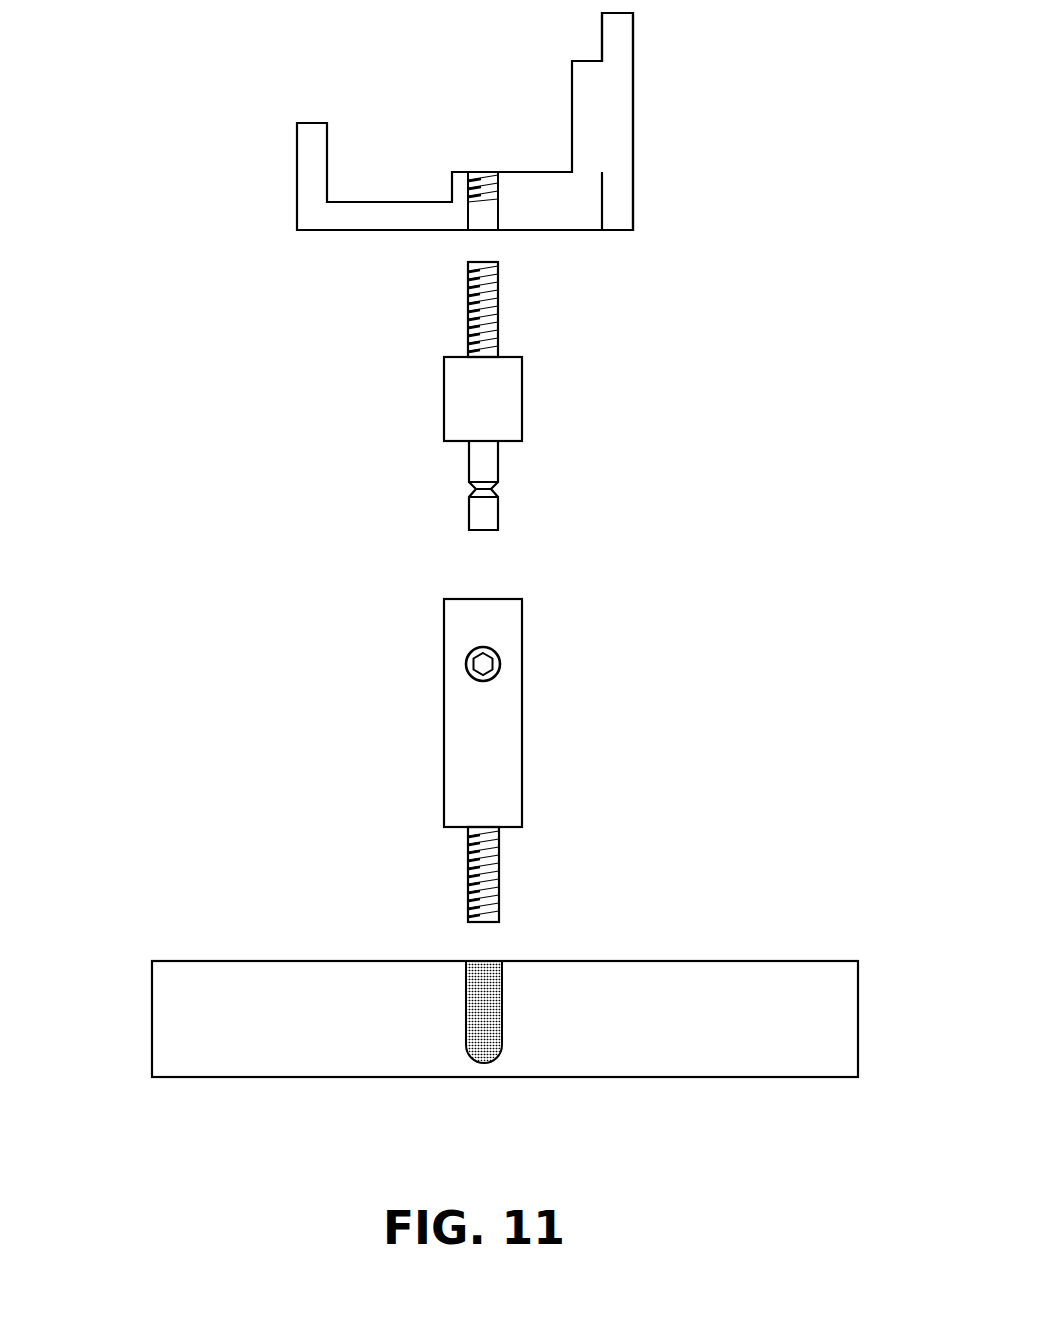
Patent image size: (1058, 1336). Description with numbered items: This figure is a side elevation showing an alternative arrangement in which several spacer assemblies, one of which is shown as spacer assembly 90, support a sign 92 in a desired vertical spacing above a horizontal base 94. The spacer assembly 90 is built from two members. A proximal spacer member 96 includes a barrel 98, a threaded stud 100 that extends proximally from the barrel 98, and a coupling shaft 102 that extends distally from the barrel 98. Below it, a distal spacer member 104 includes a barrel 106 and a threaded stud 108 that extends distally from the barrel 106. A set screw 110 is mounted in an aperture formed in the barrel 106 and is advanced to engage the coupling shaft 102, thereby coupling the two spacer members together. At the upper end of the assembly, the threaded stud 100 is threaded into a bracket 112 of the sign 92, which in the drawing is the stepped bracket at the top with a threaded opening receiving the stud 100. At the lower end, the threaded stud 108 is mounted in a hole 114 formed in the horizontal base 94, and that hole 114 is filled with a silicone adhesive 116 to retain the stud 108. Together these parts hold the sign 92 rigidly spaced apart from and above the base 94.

The spacer assembly 90 is at (237, 579).
The sign 92 is at (308, 158).
The horizontal base 94 is at (195, 993).
The proximal spacer member 96 is at (442, 406).
The barrel 98 is at (508, 398).
The threaded stud 100 is at (500, 318).
The coupling shaft 102 is at (502, 512).
The distal spacer member 104 is at (416, 760).
The barrel 106 is at (508, 789).
The threaded stud 108 is at (500, 864).
The set screw 110 is at (500, 662).
The bracket 112 is at (582, 130).
The hole 114 is at (463, 1050).
The silicone adhesive 116 is at (483, 1012).